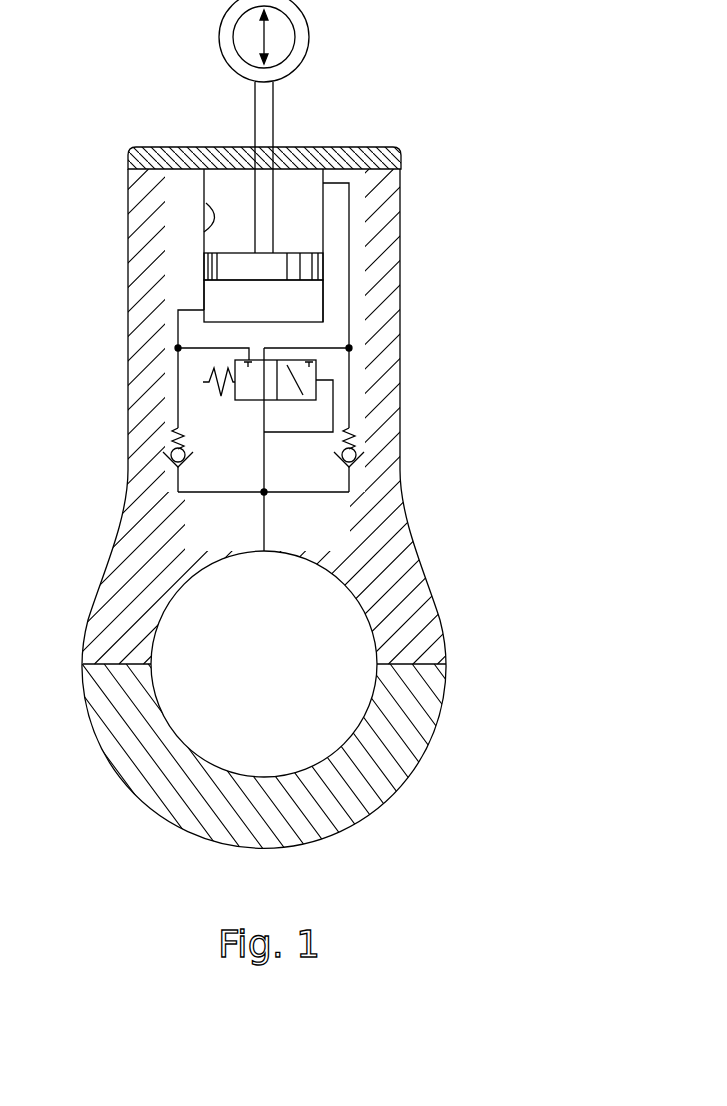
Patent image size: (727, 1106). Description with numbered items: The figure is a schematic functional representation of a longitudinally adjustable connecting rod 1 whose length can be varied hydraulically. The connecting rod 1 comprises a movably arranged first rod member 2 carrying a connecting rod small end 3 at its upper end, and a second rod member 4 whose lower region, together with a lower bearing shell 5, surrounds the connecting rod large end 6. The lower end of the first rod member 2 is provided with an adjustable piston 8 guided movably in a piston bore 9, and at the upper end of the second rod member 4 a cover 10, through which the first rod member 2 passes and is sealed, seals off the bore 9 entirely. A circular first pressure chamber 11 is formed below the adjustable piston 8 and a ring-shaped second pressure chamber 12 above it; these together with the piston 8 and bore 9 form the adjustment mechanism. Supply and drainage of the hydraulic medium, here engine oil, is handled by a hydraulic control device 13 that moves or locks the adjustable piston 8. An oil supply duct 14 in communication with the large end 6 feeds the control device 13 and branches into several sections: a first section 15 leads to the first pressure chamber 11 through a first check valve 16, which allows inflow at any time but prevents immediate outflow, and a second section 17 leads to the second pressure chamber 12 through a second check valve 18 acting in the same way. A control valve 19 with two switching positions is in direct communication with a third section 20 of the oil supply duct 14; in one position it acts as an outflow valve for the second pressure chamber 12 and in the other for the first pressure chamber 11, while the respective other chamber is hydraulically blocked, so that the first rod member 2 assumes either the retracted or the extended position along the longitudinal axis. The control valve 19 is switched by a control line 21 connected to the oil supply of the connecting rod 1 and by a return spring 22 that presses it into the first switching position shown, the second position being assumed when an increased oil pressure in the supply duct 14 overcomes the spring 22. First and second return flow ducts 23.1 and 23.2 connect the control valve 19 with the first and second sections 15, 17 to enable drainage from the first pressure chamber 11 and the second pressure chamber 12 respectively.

The connecting rod 1 is at (523, 335).
The first rod member 2 is at (275, 110).
The connecting rod small end 3 is at (302, 35).
The second rod member 4 is at (401, 245).
The lower bearing shell 5 is at (113, 723).
The connecting rod large end 6 is at (447, 740).
The adjustable piston 8 is at (203, 269).
The piston bore 9 is at (204, 231).
The cover 10 is at (401, 160).
The first pressure chamber 11 is at (227, 182).
The second pressure chamber 12 is at (310, 302).
The hydraulic control device 13 is at (170, 362).
The oil supply duct 14 is at (265, 552).
The first section 15 is at (162, 482).
The first check valve 16 is at (163, 455).
The second section 17 is at (392, 484).
The second check valve 18 is at (364, 457).
The control valve 19 is at (357, 395).
The third section 20 is at (258, 494).
The control line 21 is at (318, 374).
The return spring 22 is at (203, 382).
The first return flow duct 23.1 is at (175, 347).
The second return flow duct 23.2 is at (353, 347).